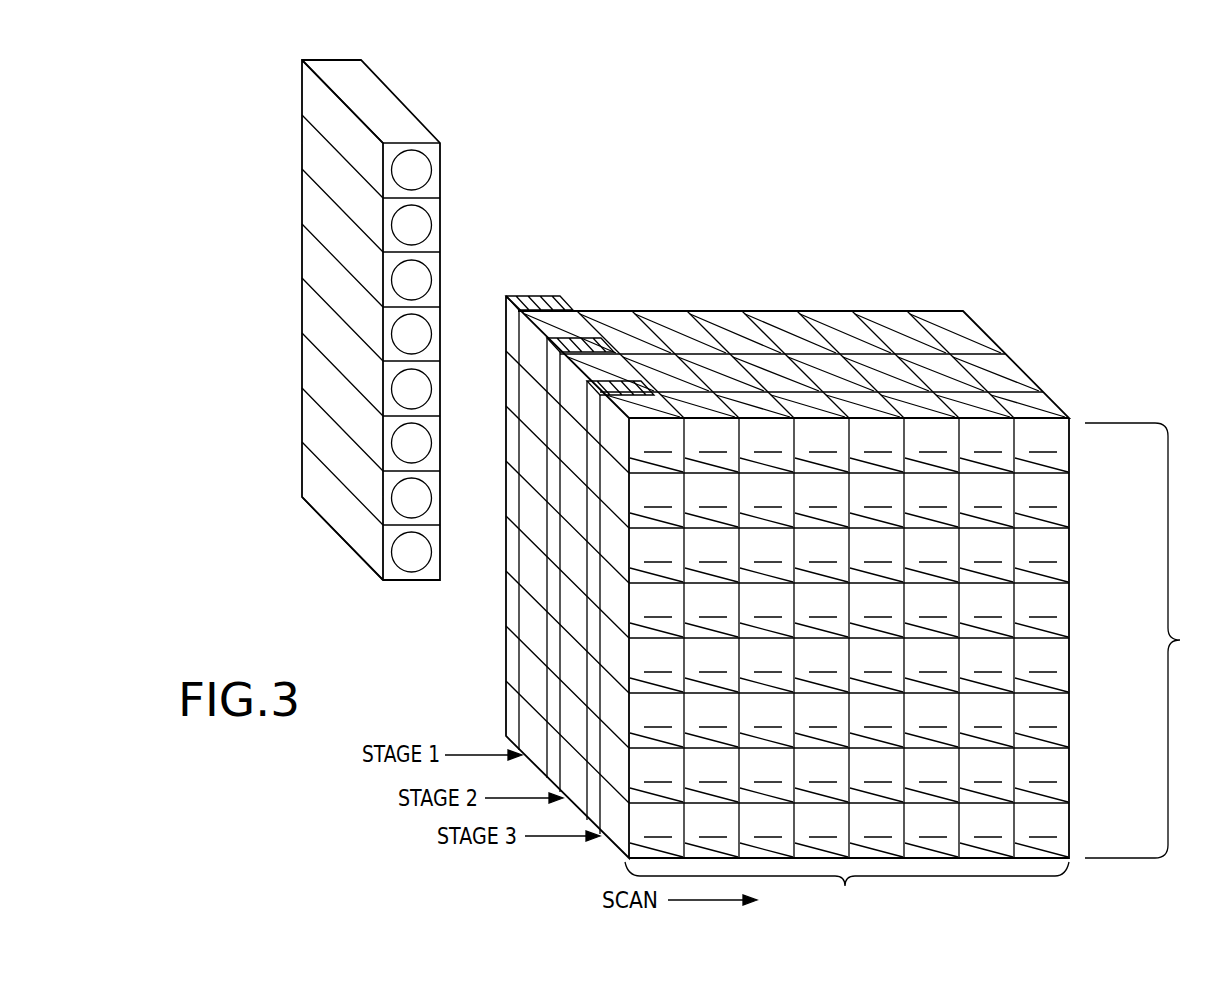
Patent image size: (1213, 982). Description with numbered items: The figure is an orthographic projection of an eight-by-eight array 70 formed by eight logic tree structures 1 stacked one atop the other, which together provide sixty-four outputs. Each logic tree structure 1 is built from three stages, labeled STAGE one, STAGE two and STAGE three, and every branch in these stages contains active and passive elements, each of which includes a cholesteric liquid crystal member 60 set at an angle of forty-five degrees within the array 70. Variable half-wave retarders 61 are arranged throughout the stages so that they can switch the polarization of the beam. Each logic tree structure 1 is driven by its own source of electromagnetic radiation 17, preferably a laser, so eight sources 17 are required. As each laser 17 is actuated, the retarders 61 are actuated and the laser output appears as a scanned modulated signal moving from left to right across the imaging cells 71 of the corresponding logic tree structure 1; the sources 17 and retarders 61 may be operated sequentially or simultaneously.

The logic tree structure 1 is at (1093, 487).
The source of electromagnetic radiation 17 is at (311, 95).
The cholesteric liquid crystal member 60 is at (602, 340).
The variable half-wave retarder 61 is at (553, 389).
The 8×8 array 70 is at (1087, 345).
The imaging cell 71 is at (917, 674).